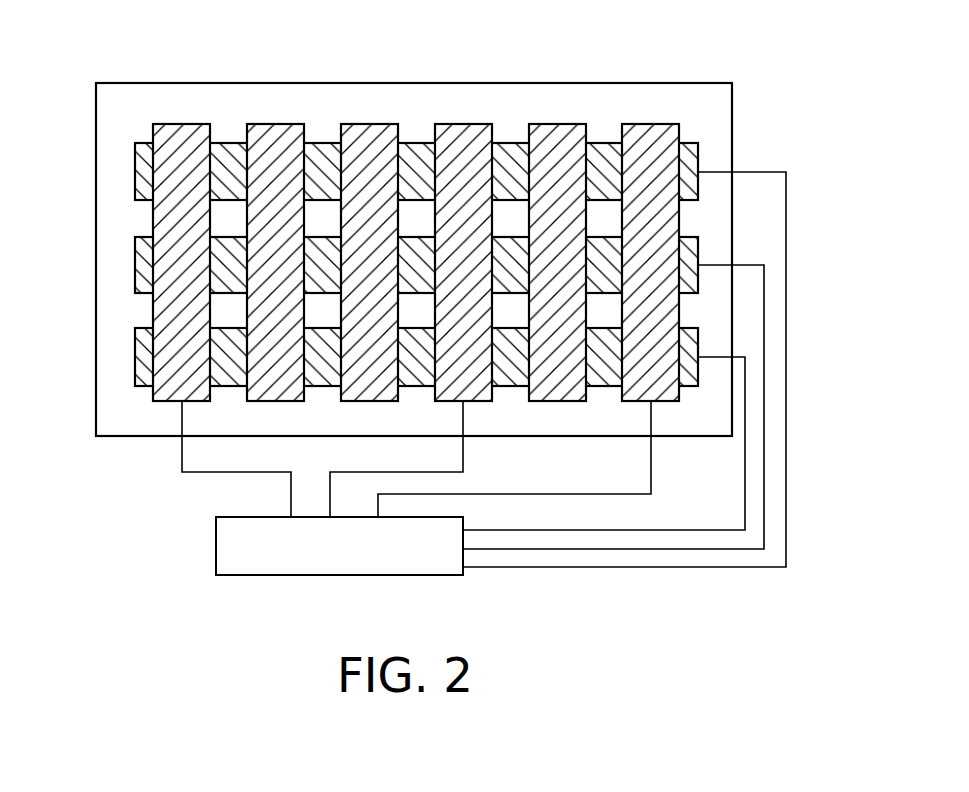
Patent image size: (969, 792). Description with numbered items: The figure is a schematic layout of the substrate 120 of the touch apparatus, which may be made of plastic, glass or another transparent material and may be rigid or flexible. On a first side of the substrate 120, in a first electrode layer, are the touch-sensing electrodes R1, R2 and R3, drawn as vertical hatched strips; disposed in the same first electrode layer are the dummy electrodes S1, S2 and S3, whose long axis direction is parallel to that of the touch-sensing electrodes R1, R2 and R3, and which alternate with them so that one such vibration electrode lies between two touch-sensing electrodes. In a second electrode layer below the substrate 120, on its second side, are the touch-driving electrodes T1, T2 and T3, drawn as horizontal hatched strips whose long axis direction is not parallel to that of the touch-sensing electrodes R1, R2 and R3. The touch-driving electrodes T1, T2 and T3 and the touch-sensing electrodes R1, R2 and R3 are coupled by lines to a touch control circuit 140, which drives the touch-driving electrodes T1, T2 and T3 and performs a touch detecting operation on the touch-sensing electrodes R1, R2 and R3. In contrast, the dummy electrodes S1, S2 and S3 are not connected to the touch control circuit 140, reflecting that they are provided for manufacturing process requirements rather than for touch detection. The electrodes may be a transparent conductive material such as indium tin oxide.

The substrate 120 is at (648, 83).
The touch control circuit 140 is at (330, 575).
The dummy electrode S1 is at (182, 124).
The dummy electrode S2 is at (368, 124).
The dummy electrode S3 is at (557, 124).
The touch-sensing electrode R1 is at (276, 124).
The touch-sensing electrode R2 is at (463, 124).
The touch-sensing electrode R3 is at (651, 124).
The touch-driving electrode T1 is at (135, 172).
The touch-driving electrode T2 is at (135, 265).
The touch-driving electrode T3 is at (135, 358).